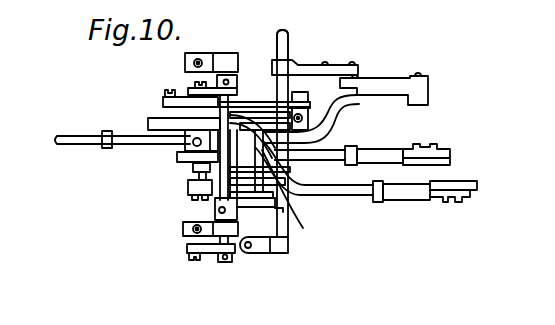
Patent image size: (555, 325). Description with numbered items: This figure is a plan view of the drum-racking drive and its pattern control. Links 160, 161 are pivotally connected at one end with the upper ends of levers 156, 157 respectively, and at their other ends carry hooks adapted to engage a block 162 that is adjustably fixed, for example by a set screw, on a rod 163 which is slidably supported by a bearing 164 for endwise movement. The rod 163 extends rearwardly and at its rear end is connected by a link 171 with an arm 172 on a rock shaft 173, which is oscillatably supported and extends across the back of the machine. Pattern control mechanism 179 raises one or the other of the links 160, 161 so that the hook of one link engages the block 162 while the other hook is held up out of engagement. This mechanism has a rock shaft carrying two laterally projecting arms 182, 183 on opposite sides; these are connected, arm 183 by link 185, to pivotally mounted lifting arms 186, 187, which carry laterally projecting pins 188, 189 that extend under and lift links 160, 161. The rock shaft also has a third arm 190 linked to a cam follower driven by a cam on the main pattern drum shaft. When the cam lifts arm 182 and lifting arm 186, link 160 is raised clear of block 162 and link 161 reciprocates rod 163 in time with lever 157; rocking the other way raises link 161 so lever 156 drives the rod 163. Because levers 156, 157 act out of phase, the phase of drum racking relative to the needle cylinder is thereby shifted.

The lever 156 is at (473, 187).
The lever 157 is at (450, 164).
The link 160 is at (322, 190).
The link 161 is at (331, 157).
The block 162 is at (185, 148).
The rod 163 is at (58, 137).
The bearing 164 is at (107, 150).
The link 171 is at (372, 78).
The arm 172 is at (318, 64).
The rock shaft 173 is at (278, 35).
The pattern control mechanism 179 is at (222, 172).
The arm 182 is at (243, 201).
The arm 183 is at (200, 77).
The link 185 is at (171, 100).
The lifting arm 186 is at (215, 195).
The lifting arm 187 is at (279, 93).
The pin 188 is at (302, 227).
The pin 189 is at (258, 117).
The arm 190 is at (212, 253).